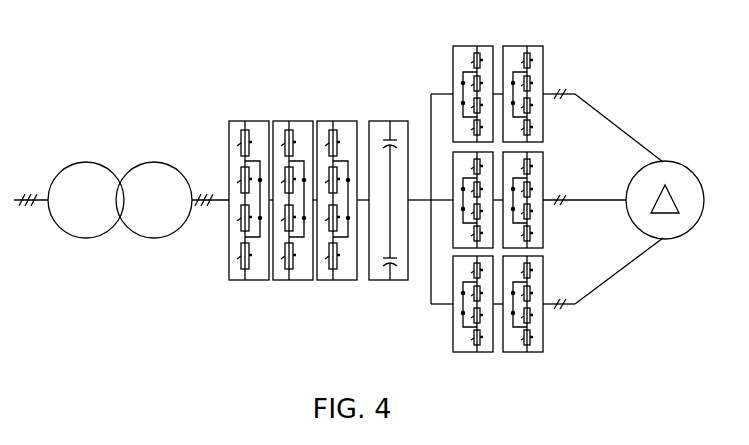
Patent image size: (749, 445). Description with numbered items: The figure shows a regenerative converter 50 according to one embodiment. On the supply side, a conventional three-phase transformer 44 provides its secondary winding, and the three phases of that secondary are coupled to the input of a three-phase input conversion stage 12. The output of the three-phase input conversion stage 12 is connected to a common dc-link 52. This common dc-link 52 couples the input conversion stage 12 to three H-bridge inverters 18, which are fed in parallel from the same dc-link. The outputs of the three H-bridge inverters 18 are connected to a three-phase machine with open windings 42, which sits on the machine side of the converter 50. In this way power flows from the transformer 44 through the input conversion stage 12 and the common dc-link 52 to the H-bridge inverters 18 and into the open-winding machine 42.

The three-phase transformer 44 is at (118, 160).
The regenerative converter 50 is at (353, 56).
The three-phase input conversion stage 12 is at (279, 107).
The common dc-link 52 is at (381, 107).
The H-bridge inverters 18 is at (527, 44).
The three-phase machine with open windings 42 is at (689, 164).